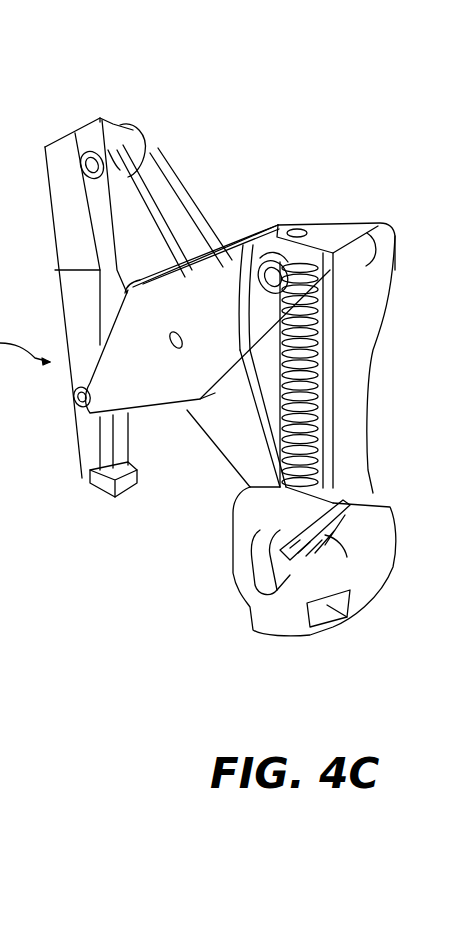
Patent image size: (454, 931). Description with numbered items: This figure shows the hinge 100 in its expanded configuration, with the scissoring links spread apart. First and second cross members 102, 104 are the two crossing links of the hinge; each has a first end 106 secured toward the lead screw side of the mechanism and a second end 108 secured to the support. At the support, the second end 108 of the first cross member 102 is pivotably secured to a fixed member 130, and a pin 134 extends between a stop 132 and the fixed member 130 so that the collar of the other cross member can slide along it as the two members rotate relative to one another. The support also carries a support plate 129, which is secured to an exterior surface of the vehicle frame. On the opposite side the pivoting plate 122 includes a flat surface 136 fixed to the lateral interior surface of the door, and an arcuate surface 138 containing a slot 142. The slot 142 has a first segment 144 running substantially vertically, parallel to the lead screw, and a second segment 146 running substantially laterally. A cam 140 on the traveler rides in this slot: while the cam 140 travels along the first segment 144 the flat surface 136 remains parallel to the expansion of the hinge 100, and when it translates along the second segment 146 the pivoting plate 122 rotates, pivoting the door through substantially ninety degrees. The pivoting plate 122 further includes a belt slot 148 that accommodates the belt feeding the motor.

The hinge 100 is at (313, 119).
The first cross member 102 is at (202, 259).
The second cross member 104 is at (200, 319).
The first end 106 is at (258, 240).
The second end 108 is at (153, 160).
The pivoting plate 122 is at (373, 400).
The support plate 129 is at (77, 236).
The fixed member 130 is at (100, 117).
The stop 132 is at (90, 479).
The pin 134 is at (100, 273).
The flat surface 136 is at (367, 252).
The arcuate surface 138 is at (270, 622).
The cam 140 is at (345, 504).
The slot 142 is at (290, 575).
The first segment 144 is at (282, 565).
The second segment 146 is at (340, 550).
The belt slot 148 is at (333, 618).